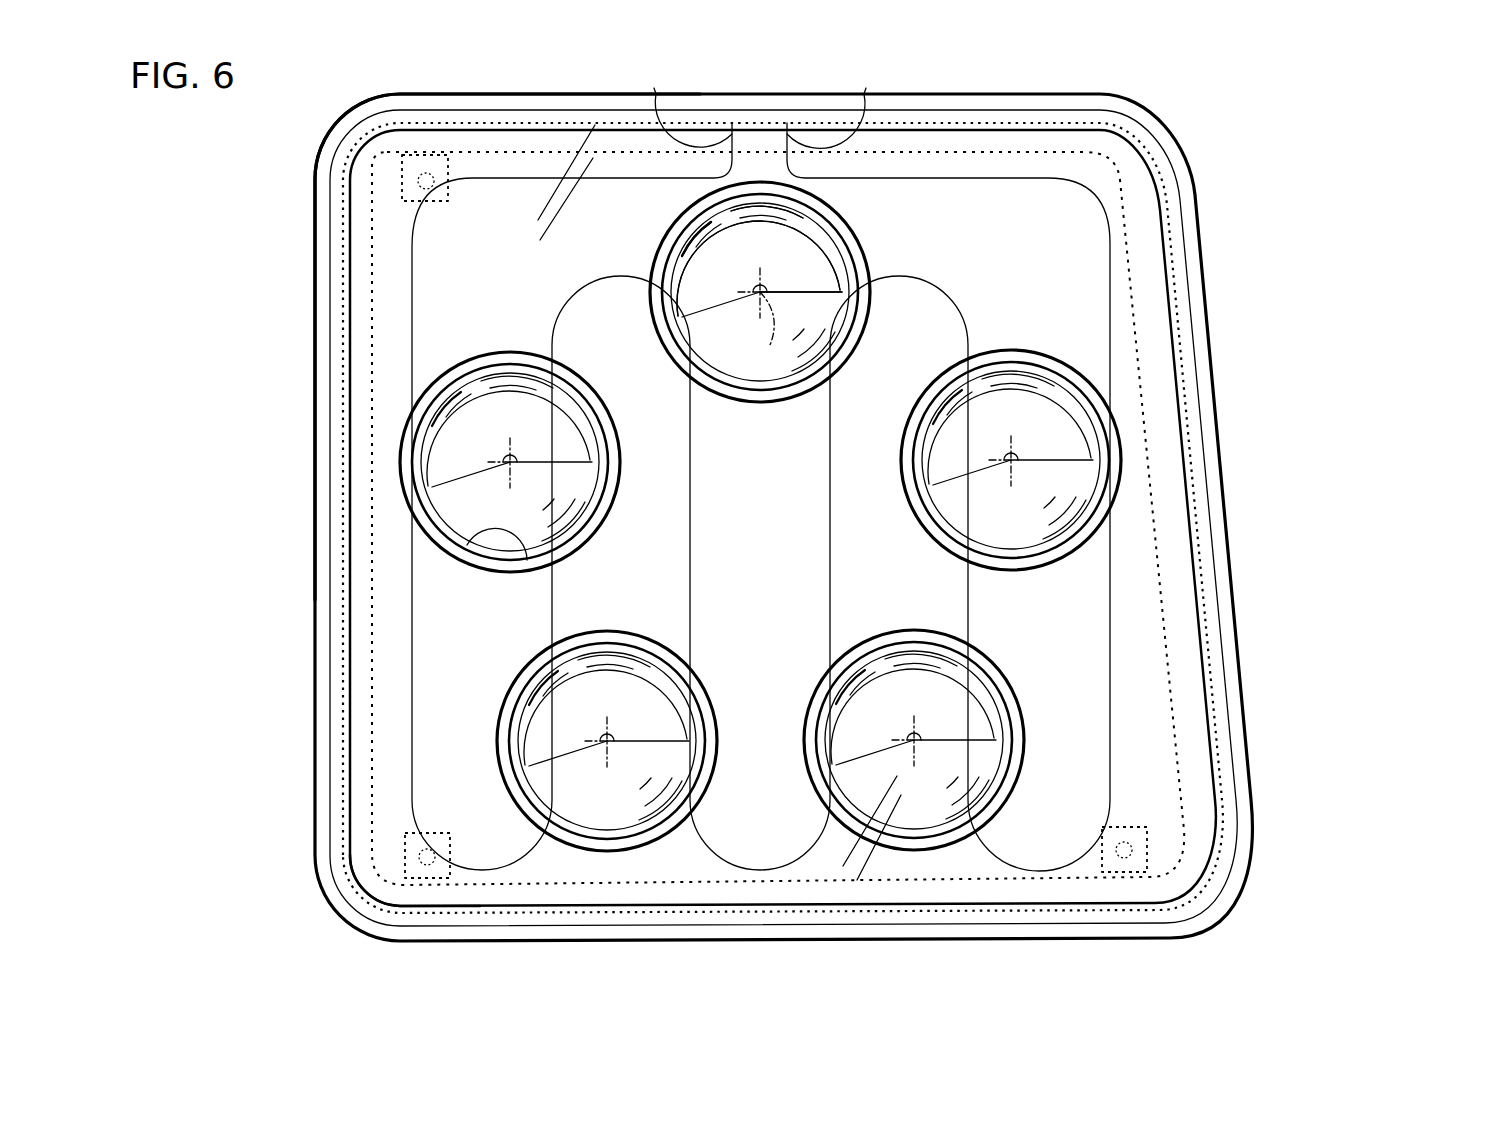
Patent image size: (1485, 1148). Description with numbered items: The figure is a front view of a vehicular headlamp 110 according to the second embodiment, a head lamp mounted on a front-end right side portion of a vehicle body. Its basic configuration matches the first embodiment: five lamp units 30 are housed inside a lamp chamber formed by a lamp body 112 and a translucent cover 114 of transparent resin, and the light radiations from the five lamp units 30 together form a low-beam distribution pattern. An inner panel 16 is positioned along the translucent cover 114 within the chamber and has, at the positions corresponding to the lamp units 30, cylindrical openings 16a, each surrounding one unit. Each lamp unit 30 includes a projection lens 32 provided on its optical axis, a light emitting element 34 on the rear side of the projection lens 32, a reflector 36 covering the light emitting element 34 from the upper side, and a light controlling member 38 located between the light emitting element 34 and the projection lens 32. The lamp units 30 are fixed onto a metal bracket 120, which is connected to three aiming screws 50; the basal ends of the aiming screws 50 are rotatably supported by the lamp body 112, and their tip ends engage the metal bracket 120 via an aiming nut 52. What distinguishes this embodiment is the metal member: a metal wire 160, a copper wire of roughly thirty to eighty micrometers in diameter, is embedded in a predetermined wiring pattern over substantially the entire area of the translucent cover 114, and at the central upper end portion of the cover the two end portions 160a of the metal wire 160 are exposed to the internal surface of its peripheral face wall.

The vehicular headlamp 110 is at (1263, 177).
The lamp body 112 is at (316, 266).
The translucent cover 114 is at (328, 367).
The inner panel 16 is at (1185, 468).
The opening 16a is at (468, 543).
The lamp unit 30 is at (852, 243).
The projection lens 32 is at (712, 232).
The light emitting element 34 is at (775, 281).
The reflector 36 is at (787, 213).
The light controlling member 38 is at (722, 305).
The metal bracket 120 is at (800, 518).
The metal wire 160 is at (412, 645).
The end portion of the metal wire 160a is at (760, 104).
The aiming screw 50 is at (397, 878).
The aiming nut 52 is at (405, 838).